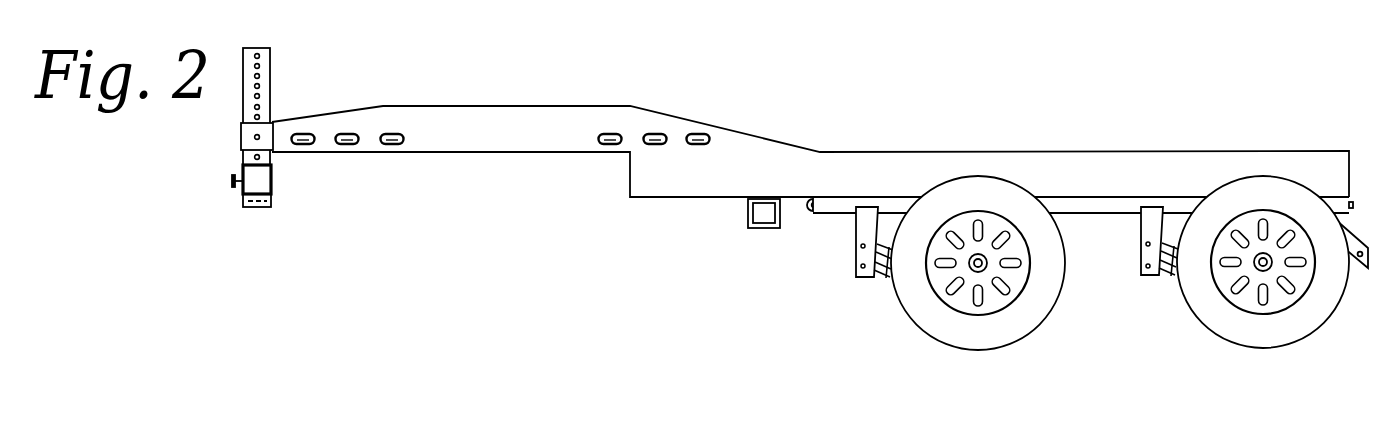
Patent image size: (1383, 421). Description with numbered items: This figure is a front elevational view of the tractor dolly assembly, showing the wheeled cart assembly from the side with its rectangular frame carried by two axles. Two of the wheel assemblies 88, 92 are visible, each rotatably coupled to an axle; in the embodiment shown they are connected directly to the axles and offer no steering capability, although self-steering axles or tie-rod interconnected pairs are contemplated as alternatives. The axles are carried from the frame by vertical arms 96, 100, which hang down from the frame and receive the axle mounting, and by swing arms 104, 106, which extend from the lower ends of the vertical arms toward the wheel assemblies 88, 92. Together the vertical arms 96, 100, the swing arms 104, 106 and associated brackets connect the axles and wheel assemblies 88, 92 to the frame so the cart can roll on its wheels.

The wheel assembly 88 is at (911, 349).
The wheel assembly 92 is at (1188, 348).
The vertical arm 96 is at (855, 237).
The vertical arm 100 is at (1142, 222).
The swing arm 104 is at (887, 277).
The swing arm 106 is at (1167, 275).